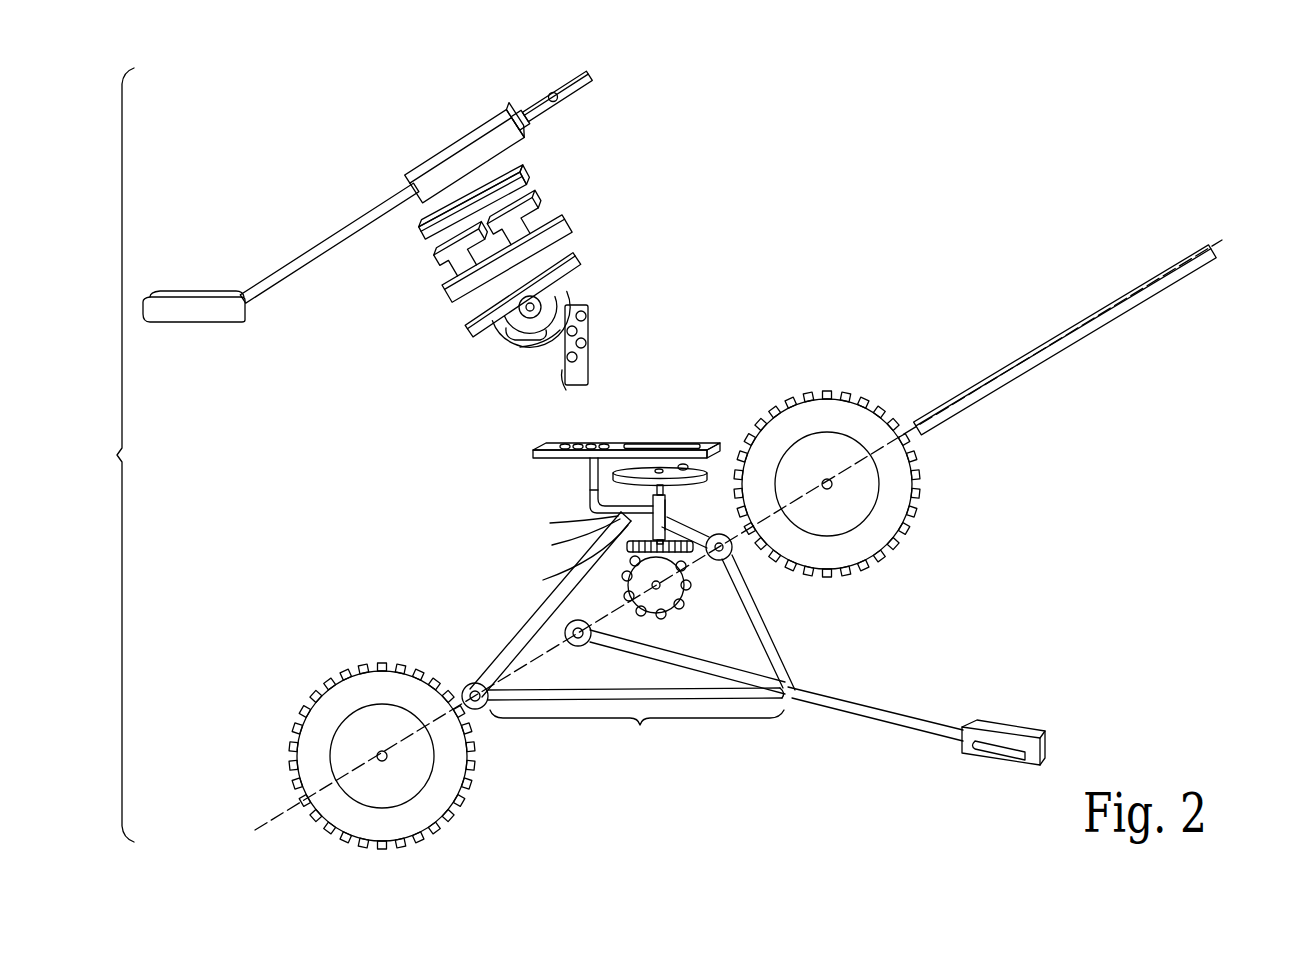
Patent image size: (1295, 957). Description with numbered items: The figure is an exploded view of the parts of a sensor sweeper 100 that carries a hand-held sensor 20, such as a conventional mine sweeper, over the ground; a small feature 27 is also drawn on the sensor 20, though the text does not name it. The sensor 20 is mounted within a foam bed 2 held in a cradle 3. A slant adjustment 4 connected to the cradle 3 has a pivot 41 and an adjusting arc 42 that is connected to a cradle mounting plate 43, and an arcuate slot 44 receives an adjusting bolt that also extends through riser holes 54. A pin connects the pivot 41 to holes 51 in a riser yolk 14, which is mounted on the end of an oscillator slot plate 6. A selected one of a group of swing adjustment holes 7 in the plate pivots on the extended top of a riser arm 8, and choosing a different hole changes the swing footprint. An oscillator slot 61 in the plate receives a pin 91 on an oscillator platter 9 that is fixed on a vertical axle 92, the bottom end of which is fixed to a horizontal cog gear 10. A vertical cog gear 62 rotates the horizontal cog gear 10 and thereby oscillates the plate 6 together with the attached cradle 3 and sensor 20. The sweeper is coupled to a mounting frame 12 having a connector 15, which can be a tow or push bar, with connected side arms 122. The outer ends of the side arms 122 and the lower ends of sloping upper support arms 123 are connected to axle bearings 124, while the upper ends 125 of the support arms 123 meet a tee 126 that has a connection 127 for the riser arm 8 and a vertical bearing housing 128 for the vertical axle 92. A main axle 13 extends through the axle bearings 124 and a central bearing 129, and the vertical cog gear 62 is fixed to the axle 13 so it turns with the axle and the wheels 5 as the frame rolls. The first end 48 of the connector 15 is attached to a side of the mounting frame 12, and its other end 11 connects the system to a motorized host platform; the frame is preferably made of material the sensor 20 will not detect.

The sensor sweeper 100 is at (1220, 141).
The sensor 20 is at (600, 84).
The hole 27 is at (549, 93).
The foam bed 2 is at (538, 170).
The cradle 3 is at (560, 214).
The slant adjustment 4 is at (534, 292).
The pivot 41 is at (566, 287).
The adjusting arc 42 is at (582, 292).
The cradle mounting plate 43 is at (470, 318).
The arcuate slot 44 is at (505, 330).
The riser yolk 14 is at (566, 357).
The holes 51 is at (556, 345).
The riser holes 54 is at (572, 380).
The swing adjustment holes 7 is at (594, 443).
The oscillator slot plate 6 is at (614, 425).
The oscillator slot 61 is at (680, 440).
The pin 91 is at (718, 472).
The vertical axle 92 is at (668, 490).
The riser arm 8 is at (575, 481).
The oscillator platter 9 is at (614, 478).
The vertical bearing housing 128 is at (590, 496).
The connection 127 is at (588, 522).
The upper ends 125 is at (570, 542).
The tee 126 is at (565, 574).
The horizontal cog gear 10 is at (728, 562).
The vertical cog gear 62 is at (626, 592).
The sloping upper support arms 123 is at (524, 604).
The axle bearings 124 is at (468, 685).
The central bearing 129 is at (578, 646).
The side arms 122 is at (666, 690).
The wheels 5 is at (322, 688).
The main axle 13 is at (945, 420).
The other end 11 is at (1012, 730).
The connector 15 is at (896, 727).
The first end 48 is at (637, 733).
The mounting frame 12 is at (556, 742).